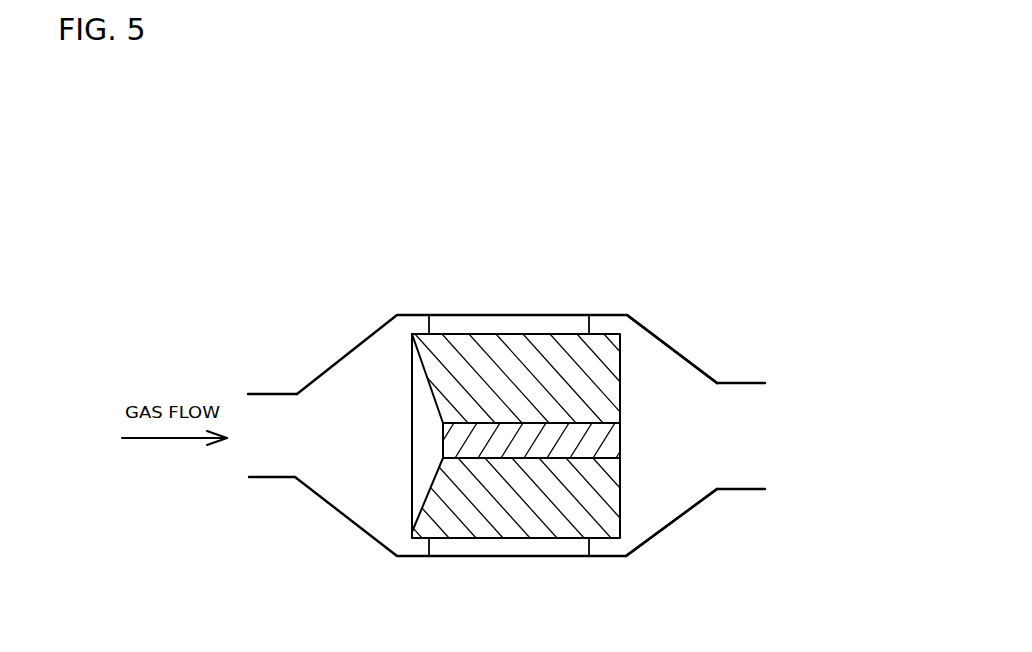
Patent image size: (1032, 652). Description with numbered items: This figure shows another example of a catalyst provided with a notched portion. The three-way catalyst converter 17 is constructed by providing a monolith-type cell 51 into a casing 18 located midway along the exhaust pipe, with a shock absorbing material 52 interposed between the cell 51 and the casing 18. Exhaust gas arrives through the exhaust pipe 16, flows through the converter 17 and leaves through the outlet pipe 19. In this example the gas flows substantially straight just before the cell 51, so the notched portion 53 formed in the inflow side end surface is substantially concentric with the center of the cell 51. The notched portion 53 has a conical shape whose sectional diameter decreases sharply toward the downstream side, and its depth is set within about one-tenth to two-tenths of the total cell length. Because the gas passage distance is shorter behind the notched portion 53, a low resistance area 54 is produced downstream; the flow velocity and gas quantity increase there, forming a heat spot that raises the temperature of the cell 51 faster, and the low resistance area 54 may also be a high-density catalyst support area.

The exhaust pipe 16 is at (270, 393).
The three-way catalyst converter 17 is at (409, 295).
The casing 18 is at (643, 330).
The outlet pipe 19 is at (745, 492).
The monolith-type cell 51 is at (605, 390).
The shock absorbing material 52 is at (540, 327).
The notched portion 53 is at (423, 470).
The low resistance area 54 is at (533, 445).